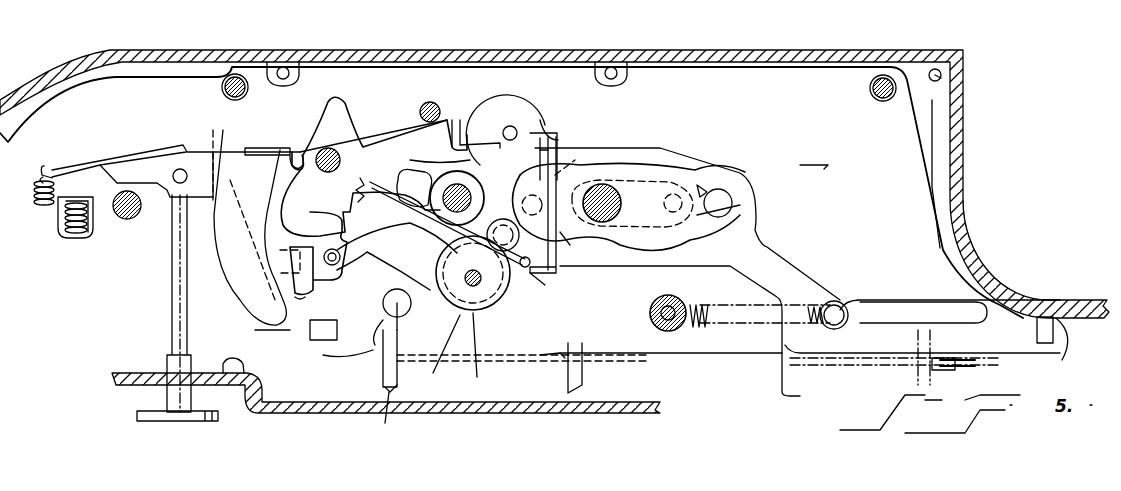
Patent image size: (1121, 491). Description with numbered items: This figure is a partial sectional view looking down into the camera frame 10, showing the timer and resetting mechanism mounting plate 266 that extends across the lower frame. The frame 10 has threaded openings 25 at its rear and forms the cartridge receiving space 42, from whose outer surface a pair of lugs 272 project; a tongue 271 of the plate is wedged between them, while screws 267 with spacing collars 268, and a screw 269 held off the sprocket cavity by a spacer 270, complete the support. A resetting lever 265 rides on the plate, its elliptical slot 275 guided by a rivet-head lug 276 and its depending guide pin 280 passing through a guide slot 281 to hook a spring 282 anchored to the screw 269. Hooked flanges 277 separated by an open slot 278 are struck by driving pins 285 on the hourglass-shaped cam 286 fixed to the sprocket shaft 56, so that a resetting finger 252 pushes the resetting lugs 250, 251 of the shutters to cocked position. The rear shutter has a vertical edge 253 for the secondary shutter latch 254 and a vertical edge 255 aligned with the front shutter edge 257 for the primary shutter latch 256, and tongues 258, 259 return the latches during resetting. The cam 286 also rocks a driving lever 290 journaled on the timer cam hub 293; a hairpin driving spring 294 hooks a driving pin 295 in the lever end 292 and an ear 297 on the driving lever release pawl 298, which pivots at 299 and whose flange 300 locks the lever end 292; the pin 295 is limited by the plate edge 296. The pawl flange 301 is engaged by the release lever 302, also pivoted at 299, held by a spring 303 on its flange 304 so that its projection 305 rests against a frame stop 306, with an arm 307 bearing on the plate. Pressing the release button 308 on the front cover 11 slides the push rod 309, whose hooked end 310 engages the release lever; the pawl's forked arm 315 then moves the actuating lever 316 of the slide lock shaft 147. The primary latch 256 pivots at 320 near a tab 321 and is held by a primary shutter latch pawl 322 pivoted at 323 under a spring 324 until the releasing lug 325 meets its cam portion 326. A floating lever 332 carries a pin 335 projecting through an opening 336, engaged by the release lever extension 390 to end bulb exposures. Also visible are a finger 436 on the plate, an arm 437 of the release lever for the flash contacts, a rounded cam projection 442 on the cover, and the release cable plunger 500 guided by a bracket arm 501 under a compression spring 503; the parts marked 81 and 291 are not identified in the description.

The frame 10 is at (958, 130).
The front cover 11 is at (308, 410).
The threaded openings 25 is at (287, 70).
The cartridge receiving space 42 is at (988, 268).
The vertical shaft 56 is at (607, 186).
The pin 81 is at (134, 217).
The slide lock shaft 147 is at (460, 184).
The resetting lug 250 is at (975, 362).
The resetting lug 251 is at (955, 372).
The resetting finger 252 is at (782, 390).
The secondary latch engaging vertical edge 253 is at (588, 365).
The secondary shutter latch 254 is at (568, 376).
The vertical edge 255 is at (383, 371).
The primary shutter latch 256 is at (386, 400).
The primary latch engaging edge 257 is at (388, 388).
The tongue 258 is at (333, 349).
The tongue 259 is at (535, 352).
The resetting lever 265 is at (775, 258).
The timer and resetting mechanism mounting plate 266 is at (816, 156).
The screws 267 is at (248, 92).
The spacing collars 268 is at (222, 95).
The screw 269 is at (672, 312).
The spacer 270 is at (662, 300).
The tongue 271 is at (1062, 362).
The lugs 272 is at (1035, 335).
The slot 275 is at (708, 192).
The guiding lug 276 is at (732, 203).
The hooked flanges 277 is at (556, 135).
The open slot 278 is at (580, 173).
The guide pin 280 is at (840, 302).
The guide slot 281 is at (907, 301).
The spring 282 is at (708, 327).
The driving pins 285 is at (527, 196).
The hourglass-shaped cam 286 is at (585, 241).
The driving lever 290 is at (600, 321).
The bar 291 is at (445, 280).
The oppositely extending end 292 is at (300, 238).
The timer cam hub 293 is at (484, 270).
The hairpin driving spring 294 is at (378, 280).
The floating lever driving pin 295 is at (341, 256).
The edge of plate 296 is at (298, 300).
The ear 297 is at (362, 177).
The driving lever release pawl 298 is at (350, 136).
The pivot 299 is at (322, 171).
The downwardly turned end flange 300 is at (296, 252).
The downwardly turned flange 301 is at (262, 142).
The release lever 302 is at (222, 148).
The spring 303 is at (37, 186).
The downwardly turned flange 304 is at (88, 160).
The projection 305 is at (452, 118).
The stop 306 is at (425, 105).
The arm 307 is at (333, 104).
The release button 308 is at (162, 418).
The release push rod 309 is at (172, 288).
The hooked end 310 is at (180, 169).
The forked arm 315 is at (417, 158).
The slide lock shaft actuating lever 316 is at (430, 175).
The pivot 320 is at (383, 306).
The tab 321 is at (337, 331).
The primary shutter latch pawl 322 is at (548, 289).
The pivot 323 is at (503, 222).
The spring 324 is at (548, 251).
The releasing lug 325 is at (439, 353).
The cam portion 326 is at (479, 353).
The floating lever 332 is at (510, 125).
The pin 335 is at (545, 120).
The opening 336 is at (565, 112).
The extension 390 is at (552, 150).
The finger 436 is at (258, 333).
The arm 437 is at (232, 286).
The rounded cam projection 442 is at (245, 365).
The plunger 500 is at (78, 229).
The arm 501 is at (63, 233).
The compression spring 503 is at (89, 222).